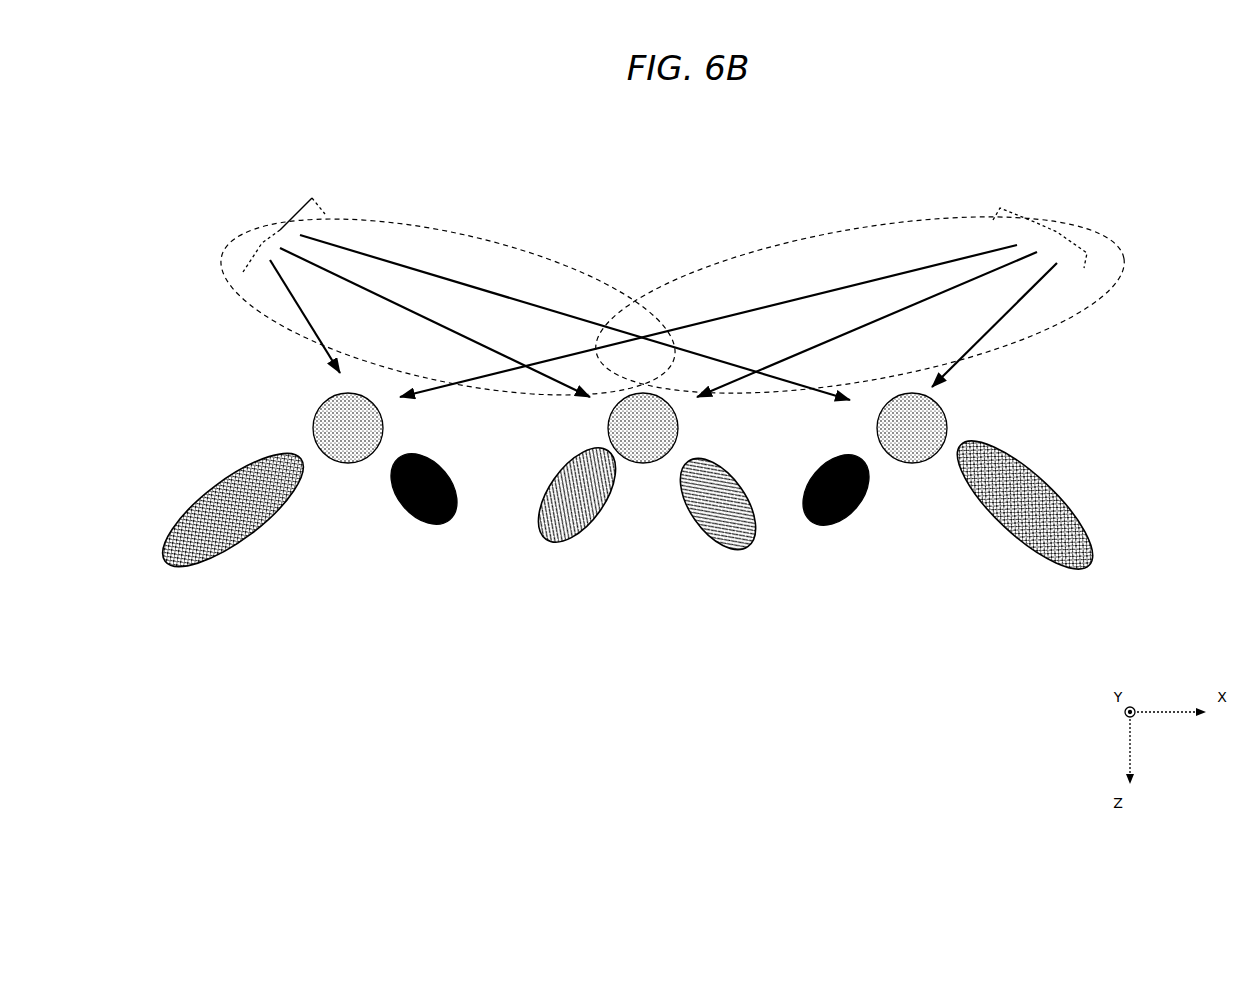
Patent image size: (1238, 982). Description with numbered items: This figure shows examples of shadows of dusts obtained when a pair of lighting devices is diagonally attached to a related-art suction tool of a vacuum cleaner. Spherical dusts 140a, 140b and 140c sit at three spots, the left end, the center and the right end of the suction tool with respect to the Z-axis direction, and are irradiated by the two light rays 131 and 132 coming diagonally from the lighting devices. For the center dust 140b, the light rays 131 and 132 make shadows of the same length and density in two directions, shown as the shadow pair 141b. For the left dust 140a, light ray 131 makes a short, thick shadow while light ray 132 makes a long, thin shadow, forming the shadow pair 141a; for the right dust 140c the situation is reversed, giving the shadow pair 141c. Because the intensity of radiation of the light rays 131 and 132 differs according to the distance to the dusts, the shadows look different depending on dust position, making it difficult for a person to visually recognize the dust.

The light ray 131 is at (243, 272).
The light ray 132 is at (1084, 266).
The dust 140a is at (317, 405).
The dust 140b is at (679, 420).
The dust 140c is at (946, 412).
The first light receiving unit 141a is at (157, 572).
The second light receiving unit 141b is at (760, 572).
The third light receiving unit 141c is at (783, 572).